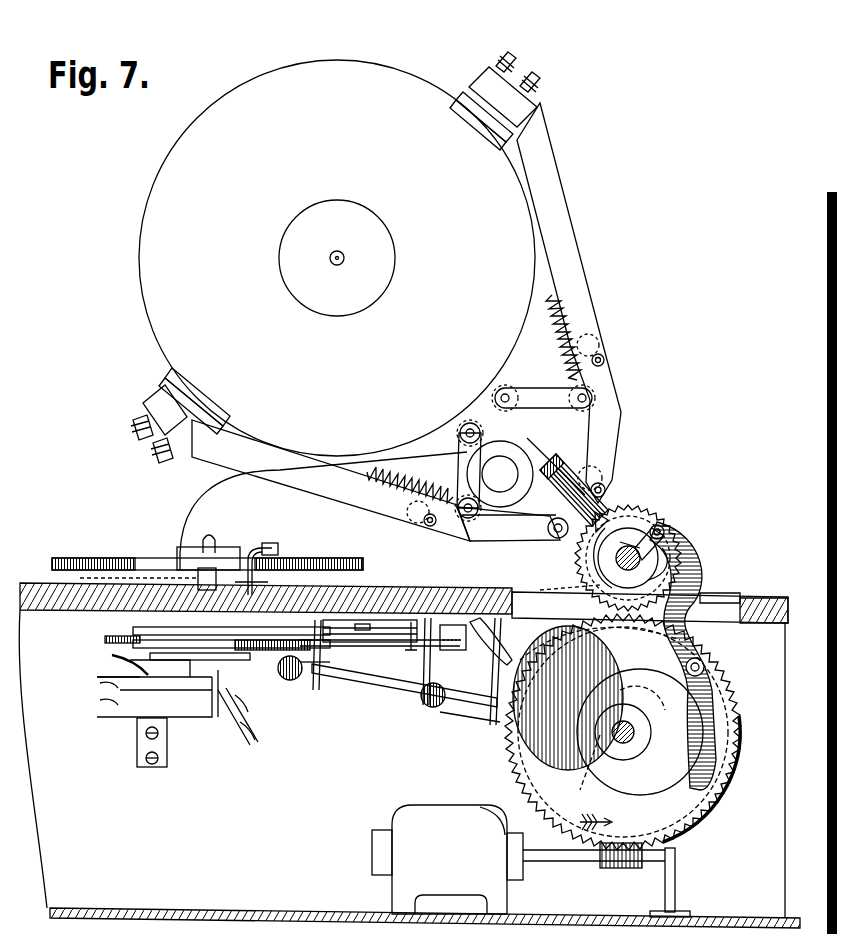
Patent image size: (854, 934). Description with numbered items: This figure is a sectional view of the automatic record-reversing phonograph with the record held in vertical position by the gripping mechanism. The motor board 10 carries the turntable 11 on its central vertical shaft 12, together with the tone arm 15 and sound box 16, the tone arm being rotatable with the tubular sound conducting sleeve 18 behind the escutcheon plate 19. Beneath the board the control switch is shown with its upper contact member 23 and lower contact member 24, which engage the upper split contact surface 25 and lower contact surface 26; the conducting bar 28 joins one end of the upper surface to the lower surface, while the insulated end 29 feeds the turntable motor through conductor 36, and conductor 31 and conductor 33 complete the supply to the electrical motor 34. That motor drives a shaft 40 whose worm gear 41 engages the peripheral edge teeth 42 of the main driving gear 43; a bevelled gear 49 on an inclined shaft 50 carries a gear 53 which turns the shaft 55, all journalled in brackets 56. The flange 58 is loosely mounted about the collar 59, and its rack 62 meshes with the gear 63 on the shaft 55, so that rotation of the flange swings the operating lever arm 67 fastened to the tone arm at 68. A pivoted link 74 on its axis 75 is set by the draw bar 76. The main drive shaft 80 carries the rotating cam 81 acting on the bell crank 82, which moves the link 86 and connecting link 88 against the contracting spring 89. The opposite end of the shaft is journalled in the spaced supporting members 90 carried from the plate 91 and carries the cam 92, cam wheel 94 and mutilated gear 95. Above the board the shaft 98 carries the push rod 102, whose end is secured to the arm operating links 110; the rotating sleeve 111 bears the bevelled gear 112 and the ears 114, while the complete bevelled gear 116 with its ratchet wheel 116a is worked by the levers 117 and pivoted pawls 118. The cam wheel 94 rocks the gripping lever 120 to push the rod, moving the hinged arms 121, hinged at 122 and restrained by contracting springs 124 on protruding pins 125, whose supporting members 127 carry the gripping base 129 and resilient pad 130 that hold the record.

The motor board 10 is at (55, 605).
The turntable 11 is at (80, 556).
The central vertical shaft 12 is at (175, 576).
The tone arm 15 is at (174, 529).
The sound box 16 is at (445, 452).
The tubular sound conducting sleeve 18 is at (240, 660).
The escutcheon plate 19 is at (270, 582).
The upper contact member 23 is at (100, 684).
The lower contact member 24 is at (100, 702).
The upper split contact surface 25 is at (188, 672).
The lower contact surface 26 is at (137, 722).
The conducting bar 28 is at (226, 720).
The insulated end of upper contact surface 29 is at (97, 677).
The conductor 31 is at (250, 704).
The conductor 33 is at (250, 730).
The electrical motor 34 is at (418, 796).
The conductor 36 is at (115, 677).
The shaft 40 is at (555, 862).
The worm gear 41 is at (618, 868).
The peripheral edge teeth 42 is at (740, 690).
The main driving gear 43 is at (510, 778).
The cooperating bevelled gear 49 is at (500, 736).
The inclined shaft 50 is at (460, 716).
The gear 53 is at (445, 692).
The shaft 55 is at (380, 682).
The brackets 56 is at (318, 686).
The flange 58 is at (108, 640).
The collar 59 is at (112, 655).
The rack 62 is at (292, 682).
The gear 63 is at (318, 664).
The operating lever arm 67 is at (262, 553).
The securing point 68 is at (280, 538).
The pivoted link 74 is at (378, 647).
The pivot axis 75 is at (411, 648).
The draw bar 76 is at (450, 650).
The main drive shaft 80 is at (628, 742).
The rotating cam 81 is at (650, 722).
The bell crank 82 is at (615, 662).
The link 86 is at (480, 618).
The connecting link 88 is at (348, 625).
The contracting spring 89 is at (400, 600).
The spaced supporting members 90 is at (741, 722).
The plate 91 is at (733, 596).
The cam 92 is at (557, 770).
The cam wheel 94 is at (668, 778).
The mutilated gear 95 is at (523, 800).
The shaft 98 is at (636, 548).
The push rod 102 is at (528, 458).
The arm operating links 110 is at (508, 453).
The rotating sleeve 111 is at (566, 482).
The bevelled gear 112 is at (606, 514).
The ears 114 is at (600, 480).
The complete bevelled gear 116 is at (648, 540).
The ratchet wheel 116a is at (650, 545).
The levers 117 is at (558, 582).
The pivoted pawls 118 is at (662, 527).
The gripping lever 120 is at (708, 667).
The hinged arms 121 is at (583, 262).
The hinge 122 is at (606, 360).
The contracting springs 124 is at (372, 470).
The protruding pins 125 is at (568, 378).
The supporting members 127 is at (528, 122).
The gripping base 129 is at (462, 94).
The resilient pad 130 is at (490, 118).